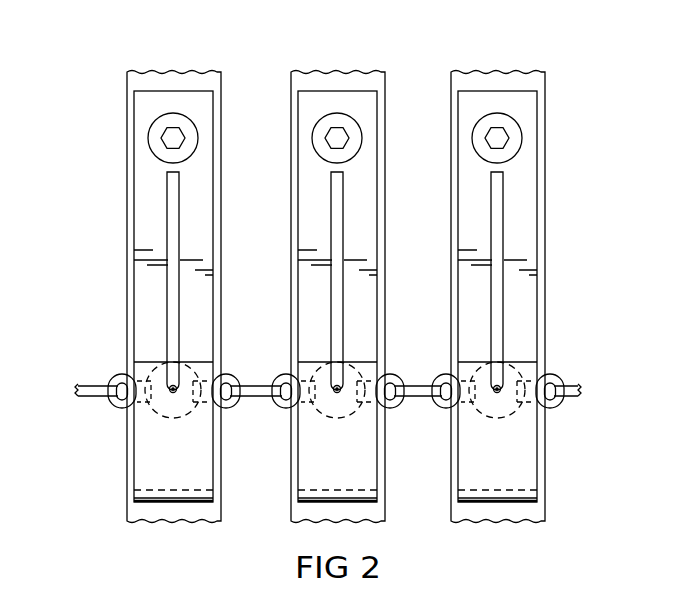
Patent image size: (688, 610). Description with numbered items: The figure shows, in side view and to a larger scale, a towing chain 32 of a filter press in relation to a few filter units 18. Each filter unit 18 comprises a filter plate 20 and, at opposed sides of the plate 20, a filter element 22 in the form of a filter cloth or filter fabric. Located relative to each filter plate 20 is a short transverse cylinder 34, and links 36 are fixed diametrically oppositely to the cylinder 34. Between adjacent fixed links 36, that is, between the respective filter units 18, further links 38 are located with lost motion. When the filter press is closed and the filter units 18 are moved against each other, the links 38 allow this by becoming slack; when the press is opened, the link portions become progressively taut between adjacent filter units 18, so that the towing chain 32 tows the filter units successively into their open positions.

The filter unit 18 is at (198, 61).
The filter plate 20 is at (146, 104).
The filter element 22 is at (127, 218).
The towing chain 32 is at (74, 378).
The transverse cylinder 34 is at (160, 364).
The fixed link 36 is at (122, 409).
The link 38 is at (257, 385).